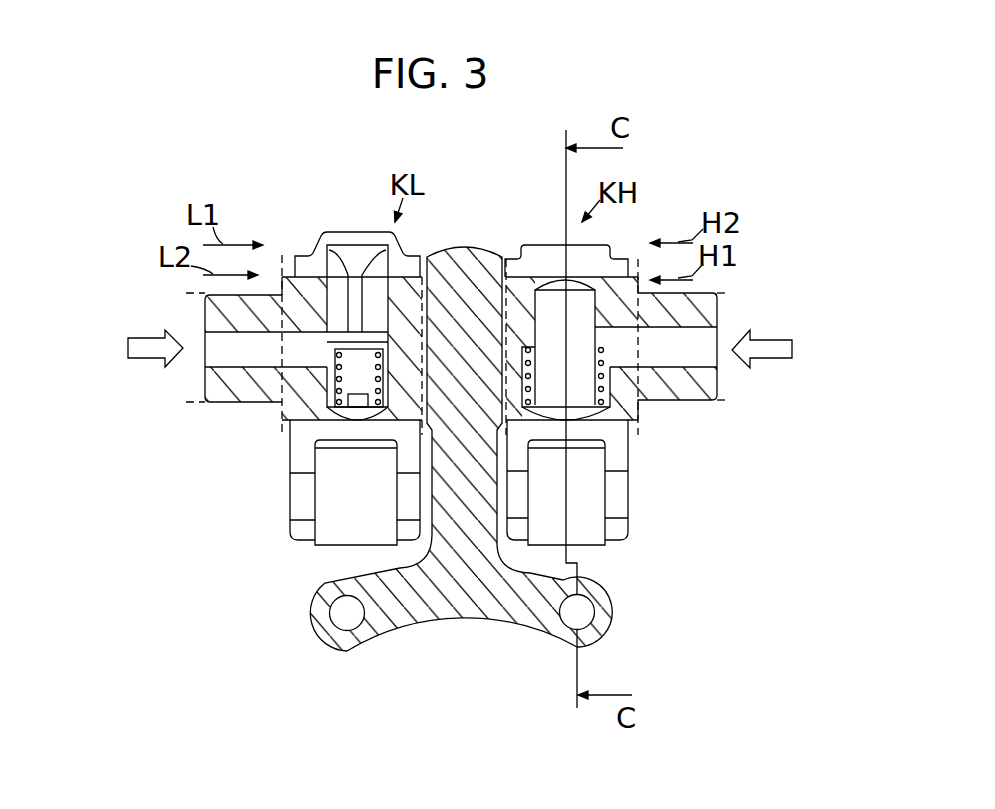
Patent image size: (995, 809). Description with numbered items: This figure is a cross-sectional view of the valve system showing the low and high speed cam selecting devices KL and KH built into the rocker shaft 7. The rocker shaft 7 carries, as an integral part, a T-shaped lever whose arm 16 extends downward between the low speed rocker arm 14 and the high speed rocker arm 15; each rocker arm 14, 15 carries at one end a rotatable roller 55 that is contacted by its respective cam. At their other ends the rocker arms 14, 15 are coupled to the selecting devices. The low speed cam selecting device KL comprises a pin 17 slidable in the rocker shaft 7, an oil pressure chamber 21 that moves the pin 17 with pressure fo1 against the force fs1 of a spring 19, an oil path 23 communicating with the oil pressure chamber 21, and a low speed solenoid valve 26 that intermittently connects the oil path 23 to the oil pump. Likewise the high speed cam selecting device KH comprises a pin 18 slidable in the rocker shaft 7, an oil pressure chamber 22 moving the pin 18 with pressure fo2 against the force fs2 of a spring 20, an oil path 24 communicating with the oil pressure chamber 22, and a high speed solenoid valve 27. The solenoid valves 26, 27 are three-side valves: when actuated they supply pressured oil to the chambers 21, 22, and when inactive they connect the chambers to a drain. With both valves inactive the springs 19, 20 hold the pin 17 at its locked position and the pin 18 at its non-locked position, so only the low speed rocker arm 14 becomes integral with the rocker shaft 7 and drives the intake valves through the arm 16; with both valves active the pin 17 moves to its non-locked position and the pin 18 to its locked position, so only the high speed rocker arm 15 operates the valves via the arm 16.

The rocker shaft 7 is at (215, 385).
The low speed rocker arm 14 is at (302, 445).
The high speed rocker arm 15 is at (617, 458).
The arm 16 is at (453, 605).
The pin 17 is at (342, 256).
The pin 18 is at (555, 327).
The spring 19 is at (335, 385).
The spring 20 is at (602, 374).
The oil pressure chamber 21 is at (323, 236).
The oil pressure chamber 22 is at (537, 421).
The oil path 23 is at (215, 337).
The oil path 24 is at (715, 337).
The low speed solenoid valve 26 is at (110, 348).
The high speed solenoid valve 27 is at (806, 343).
The roller 55 is at (337, 532).